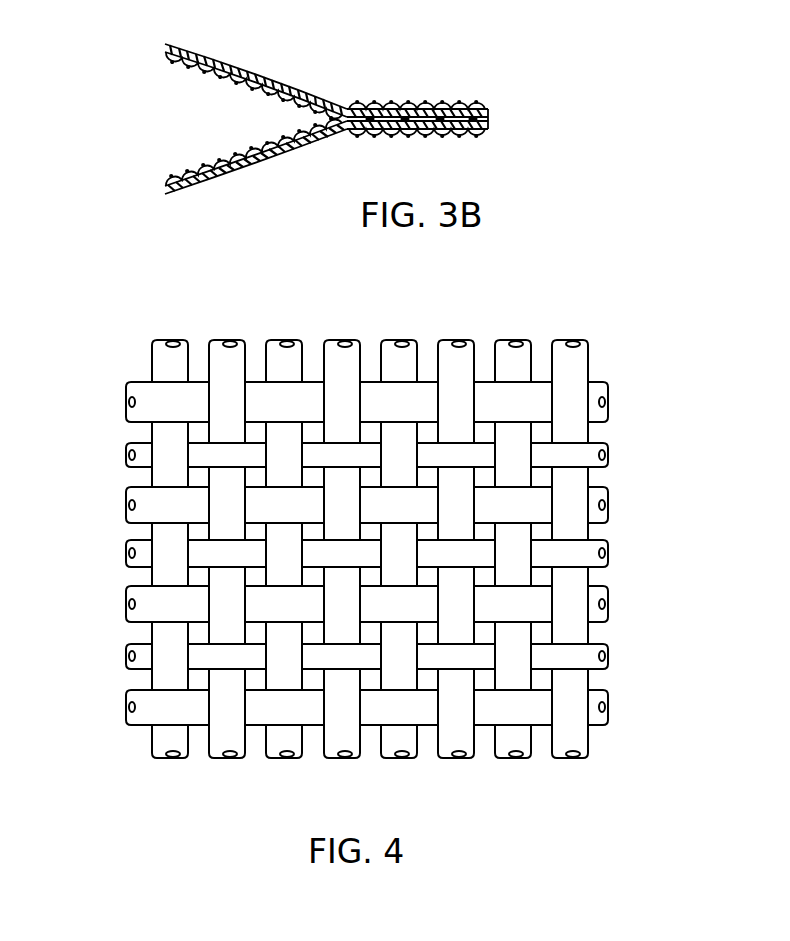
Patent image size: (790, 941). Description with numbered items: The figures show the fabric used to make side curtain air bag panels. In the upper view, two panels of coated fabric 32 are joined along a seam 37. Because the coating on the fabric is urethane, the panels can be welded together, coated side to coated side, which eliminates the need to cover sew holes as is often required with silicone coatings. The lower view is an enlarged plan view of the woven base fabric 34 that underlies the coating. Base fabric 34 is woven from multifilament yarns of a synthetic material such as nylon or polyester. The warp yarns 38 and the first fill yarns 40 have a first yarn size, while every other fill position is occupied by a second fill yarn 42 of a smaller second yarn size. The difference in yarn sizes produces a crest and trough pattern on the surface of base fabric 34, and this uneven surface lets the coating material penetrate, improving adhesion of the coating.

In FIG. 3B, the coated fabric 32 is at (243, 70).
In FIG. 3B, the seam 37 is at (451, 88).
In FIG. 4, the woven base fabric 34 is at (373, 520).
In FIG. 4, the warp yarns 38 is at (221, 342).
In FIG. 4, the first fill yarns 40 is at (609, 494).
In FIG. 4, the second fill yarn 42 is at (130, 540).